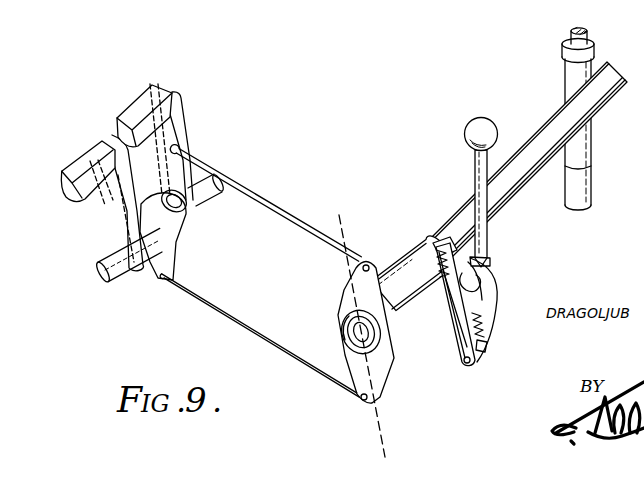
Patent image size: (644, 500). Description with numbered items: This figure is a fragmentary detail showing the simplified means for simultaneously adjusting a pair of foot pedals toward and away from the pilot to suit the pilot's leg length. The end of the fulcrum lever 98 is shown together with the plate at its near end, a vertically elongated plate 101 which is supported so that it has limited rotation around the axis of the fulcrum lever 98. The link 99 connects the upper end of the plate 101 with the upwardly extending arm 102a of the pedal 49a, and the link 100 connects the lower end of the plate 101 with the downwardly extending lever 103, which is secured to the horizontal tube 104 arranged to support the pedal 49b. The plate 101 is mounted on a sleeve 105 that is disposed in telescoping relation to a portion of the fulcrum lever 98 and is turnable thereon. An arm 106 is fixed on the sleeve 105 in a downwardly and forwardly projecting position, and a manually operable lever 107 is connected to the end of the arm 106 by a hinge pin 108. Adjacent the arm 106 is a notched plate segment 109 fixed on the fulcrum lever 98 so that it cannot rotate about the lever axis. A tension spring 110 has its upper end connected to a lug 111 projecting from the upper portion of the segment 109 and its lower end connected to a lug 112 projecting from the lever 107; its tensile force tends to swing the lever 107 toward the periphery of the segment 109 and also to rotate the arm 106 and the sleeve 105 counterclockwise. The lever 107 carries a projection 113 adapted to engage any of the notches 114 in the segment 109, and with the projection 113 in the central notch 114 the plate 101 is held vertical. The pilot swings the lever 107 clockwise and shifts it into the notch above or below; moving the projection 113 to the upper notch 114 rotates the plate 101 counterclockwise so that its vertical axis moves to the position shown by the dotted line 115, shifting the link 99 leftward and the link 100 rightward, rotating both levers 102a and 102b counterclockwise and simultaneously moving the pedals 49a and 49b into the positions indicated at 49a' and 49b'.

The pedal 49a is at (153, 101).
The adjusted position of pedal 49a 49a' is at (138, 132).
The pedal 49b is at (88, 157).
The adjusted position of pedal 49b 49b' is at (80, 167).
The upwardly extending arm 102a is at (189, 129).
The lever 102b is at (122, 230).
The downwardly extending lever 103 is at (174, 253).
The horizontal tube 104 is at (146, 265).
The link 99 is at (272, 203).
The link 100 is at (233, 314).
The vertically elongated plate 101 is at (345, 291).
The sleeve 105 is at (347, 316).
The fulcrum lever 98 is at (455, 216).
The dotted line 115 is at (343, 230).
The notched plate segment 109 is at (450, 245).
The lug 111 is at (432, 252).
The projection 113 is at (465, 279).
The manually operable lever 107 is at (487, 297).
The tension spring 110 is at (487, 322).
The lug 112 is at (487, 346).
The hinge pin 108 is at (464, 363).
The notches 114 is at (458, 305).
The arm 106 is at (438, 308).